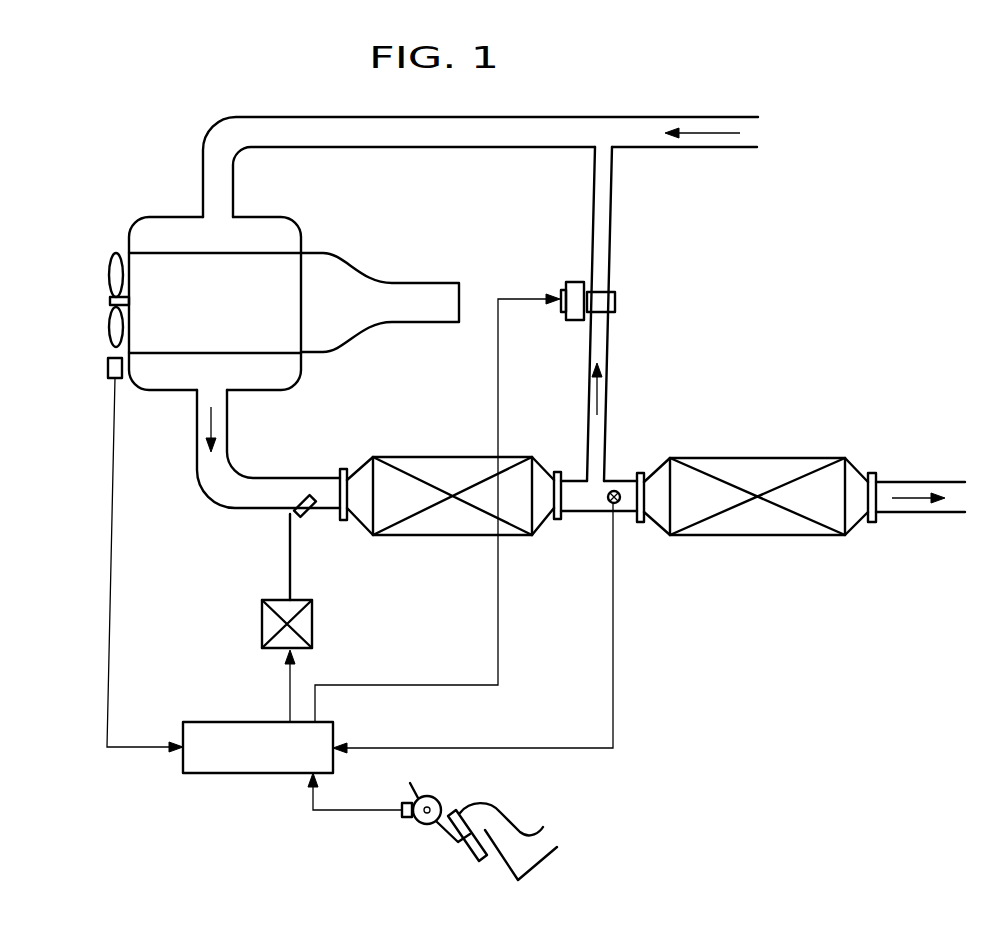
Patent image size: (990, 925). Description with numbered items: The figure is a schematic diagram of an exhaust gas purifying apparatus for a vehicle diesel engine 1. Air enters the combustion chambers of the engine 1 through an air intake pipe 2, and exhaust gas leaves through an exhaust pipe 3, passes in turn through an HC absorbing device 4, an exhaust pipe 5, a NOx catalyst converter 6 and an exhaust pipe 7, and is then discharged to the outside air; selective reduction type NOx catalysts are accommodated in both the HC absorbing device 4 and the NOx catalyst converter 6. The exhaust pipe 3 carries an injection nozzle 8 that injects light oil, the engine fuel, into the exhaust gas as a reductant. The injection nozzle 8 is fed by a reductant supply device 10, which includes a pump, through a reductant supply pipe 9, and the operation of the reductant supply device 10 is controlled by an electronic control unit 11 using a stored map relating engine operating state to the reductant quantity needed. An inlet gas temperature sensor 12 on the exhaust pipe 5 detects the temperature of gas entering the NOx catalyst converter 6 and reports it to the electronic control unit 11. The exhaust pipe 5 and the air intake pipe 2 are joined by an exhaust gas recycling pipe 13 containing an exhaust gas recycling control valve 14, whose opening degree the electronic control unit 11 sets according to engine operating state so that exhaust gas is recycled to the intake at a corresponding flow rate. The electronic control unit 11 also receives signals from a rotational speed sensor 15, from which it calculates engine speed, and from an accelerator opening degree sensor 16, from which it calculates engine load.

The diesel engine 1 is at (313, 253).
The air intake pipe 2 is at (203, 175).
The exhaust pipe 3 is at (208, 495).
The HC absorbing device 4 is at (425, 457).
The exhaust pipe 5 is at (578, 512).
The NOx catalyst converter 6 is at (763, 458).
The exhaust pipe 7 is at (915, 482).
The injection nozzle 8 is at (307, 515).
The reductant supply pipe 9 is at (290, 563).
The reductant supply device 10 is at (262, 625).
The electronic control unit 11 is at (205, 773).
The inlet gas temperature sensor 12 is at (618, 490).
The exhaust gas recycling pipe 13 is at (612, 222).
The exhaust gas recycling control valve 14 is at (575, 282).
The rotational speed sensor 15 is at (108, 368).
The accelerator opening degree sensor 16 is at (403, 817).